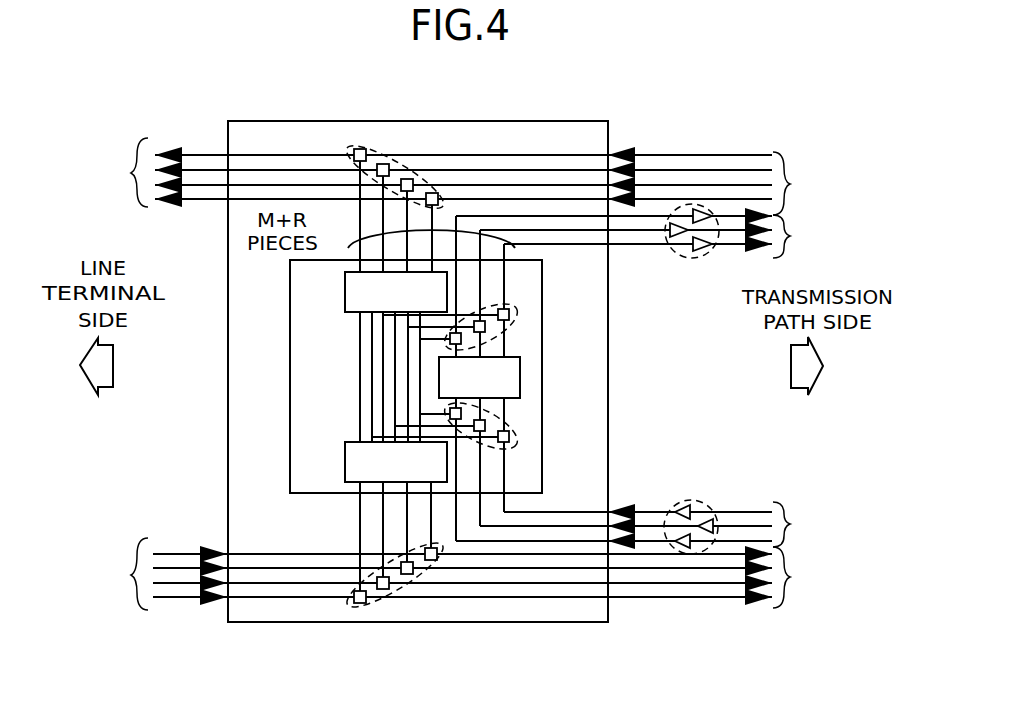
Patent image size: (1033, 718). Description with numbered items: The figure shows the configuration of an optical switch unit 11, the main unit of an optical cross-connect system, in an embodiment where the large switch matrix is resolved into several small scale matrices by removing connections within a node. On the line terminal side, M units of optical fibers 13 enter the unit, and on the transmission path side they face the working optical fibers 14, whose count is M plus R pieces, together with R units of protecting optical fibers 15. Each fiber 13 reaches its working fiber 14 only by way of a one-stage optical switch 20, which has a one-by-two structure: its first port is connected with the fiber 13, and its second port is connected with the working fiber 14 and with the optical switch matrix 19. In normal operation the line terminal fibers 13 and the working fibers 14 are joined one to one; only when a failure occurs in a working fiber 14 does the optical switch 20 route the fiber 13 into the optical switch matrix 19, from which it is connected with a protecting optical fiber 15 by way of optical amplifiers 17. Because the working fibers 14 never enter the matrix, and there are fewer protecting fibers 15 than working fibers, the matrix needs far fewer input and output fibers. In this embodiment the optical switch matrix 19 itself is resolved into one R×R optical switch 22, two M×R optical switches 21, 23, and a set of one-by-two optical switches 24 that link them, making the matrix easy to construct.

The optical switch unit 11 is at (272, 120).
The optical fibers 13 is at (131, 173).
The working optical fibers 14 is at (790, 184).
The protecting optical fibers 15 is at (790, 236).
The optical amplifiers 17 is at (693, 258).
The optical switch matrix 19 is at (290, 356).
The optical switch 20 is at (378, 134).
The M×R optical switch 21 is at (345, 295).
The R×R optical switch 22 is at (520, 374).
The M×R optical switch 23 is at (345, 462).
The 1×2 optical switches 24 is at (518, 318).